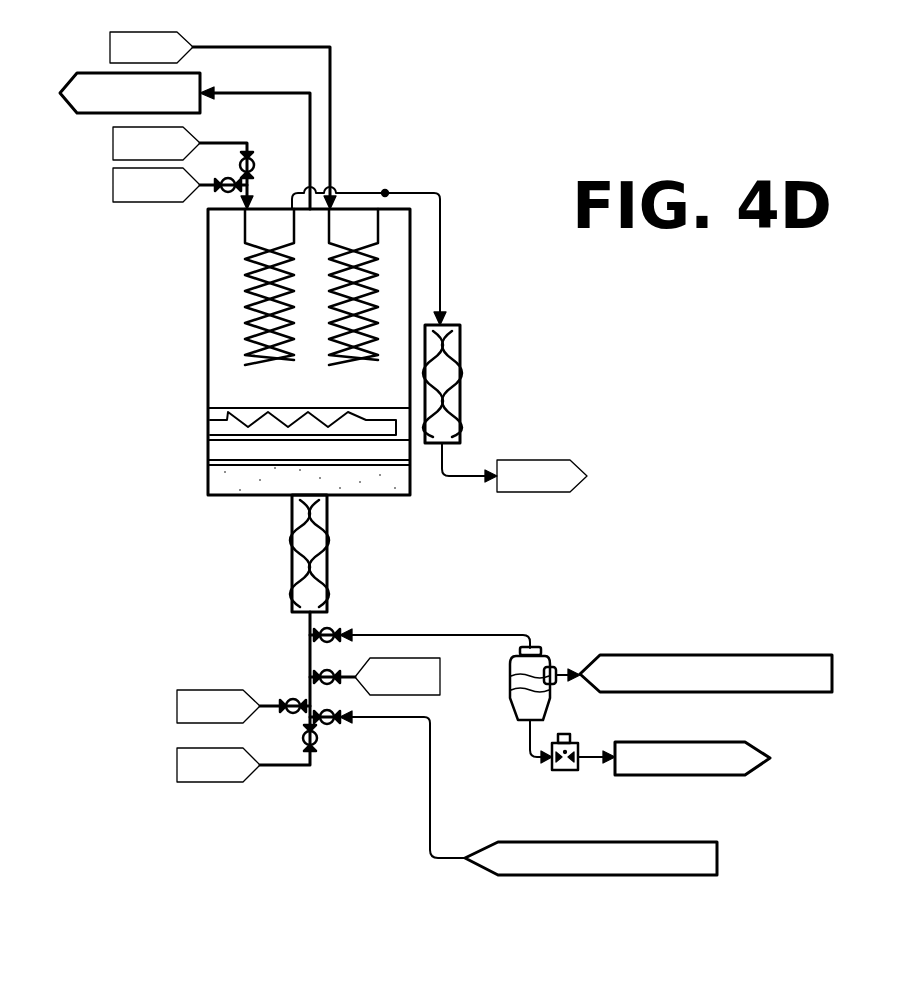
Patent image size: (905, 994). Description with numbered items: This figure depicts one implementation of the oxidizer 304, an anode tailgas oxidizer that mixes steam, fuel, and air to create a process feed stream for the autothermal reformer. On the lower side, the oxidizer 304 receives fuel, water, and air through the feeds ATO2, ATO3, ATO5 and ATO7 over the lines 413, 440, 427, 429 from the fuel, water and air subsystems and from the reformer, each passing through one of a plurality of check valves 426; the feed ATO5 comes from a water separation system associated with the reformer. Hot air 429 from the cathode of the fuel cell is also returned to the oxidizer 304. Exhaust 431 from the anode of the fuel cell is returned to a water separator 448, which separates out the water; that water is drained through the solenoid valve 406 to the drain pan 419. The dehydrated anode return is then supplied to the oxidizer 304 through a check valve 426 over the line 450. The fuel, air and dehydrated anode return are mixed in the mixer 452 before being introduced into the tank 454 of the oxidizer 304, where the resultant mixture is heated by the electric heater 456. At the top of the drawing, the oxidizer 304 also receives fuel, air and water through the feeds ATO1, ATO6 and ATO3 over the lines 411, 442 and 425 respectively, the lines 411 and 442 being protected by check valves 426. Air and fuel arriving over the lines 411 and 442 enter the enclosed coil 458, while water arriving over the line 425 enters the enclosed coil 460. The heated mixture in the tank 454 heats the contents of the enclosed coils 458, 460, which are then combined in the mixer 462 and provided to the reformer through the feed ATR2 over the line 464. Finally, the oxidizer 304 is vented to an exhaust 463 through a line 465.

The oxidizer 304 is at (468, 80).
The solenoid valve 406 is at (550, 771).
The line 411 is at (217, 142).
The line 413 is at (265, 712).
The drain pan 419 is at (698, 776).
The line 425 is at (283, 46).
The check valve 426 is at (282, 146).
The line 427 is at (343, 723).
The hot air 429 is at (345, 670).
The exhaust 431 is at (685, 655).
The line 440 is at (292, 768).
The line 442 is at (180, 174).
The water separator 448 is at (545, 660).
The line 450 is at (495, 633).
The mixer 452 is at (327, 558).
The tank 454 is at (207, 480).
The electric heater 456 is at (228, 416).
The enclosed coil 458 is at (278, 362).
The enclosed coil 460 is at (368, 363).
The mixer 462 is at (462, 325).
The exhaust 463 is at (67, 83).
The line 464 is at (470, 477).
The line 465 is at (245, 92).